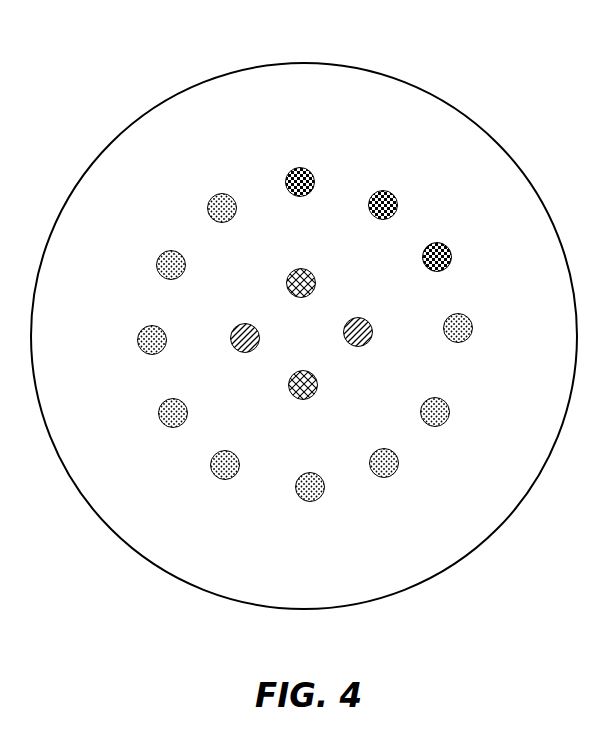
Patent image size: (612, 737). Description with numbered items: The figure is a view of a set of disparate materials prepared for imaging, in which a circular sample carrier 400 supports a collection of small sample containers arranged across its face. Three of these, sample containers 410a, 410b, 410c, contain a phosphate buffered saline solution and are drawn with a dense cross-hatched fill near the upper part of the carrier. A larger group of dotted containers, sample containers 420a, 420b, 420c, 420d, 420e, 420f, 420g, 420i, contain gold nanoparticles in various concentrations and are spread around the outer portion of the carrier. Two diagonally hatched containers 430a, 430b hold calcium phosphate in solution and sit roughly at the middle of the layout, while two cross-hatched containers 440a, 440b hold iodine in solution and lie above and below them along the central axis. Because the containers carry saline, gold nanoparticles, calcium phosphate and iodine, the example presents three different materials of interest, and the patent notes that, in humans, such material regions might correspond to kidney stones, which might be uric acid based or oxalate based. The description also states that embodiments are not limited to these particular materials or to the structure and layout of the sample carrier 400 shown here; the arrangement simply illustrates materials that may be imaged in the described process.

The sample carrier 400 is at (361, 69).
The sample container 410a is at (307, 169).
The sample container 410b is at (390, 192).
The sample container 410c is at (444, 244).
The sample container 420a is at (465, 315).
The sample container 420b is at (442, 400).
The sample container 420c is at (316, 474).
The sample container 420d is at (232, 452).
The sample container 420e is at (180, 400).
The sample container 420f is at (159, 328).
The sample container 420g is at (180, 254).
The sample container 420i is at (232, 197).
The container 430a is at (250, 324).
The container 430b is at (365, 320).
The container 440a is at (308, 270).
The container 440b is at (309, 372).